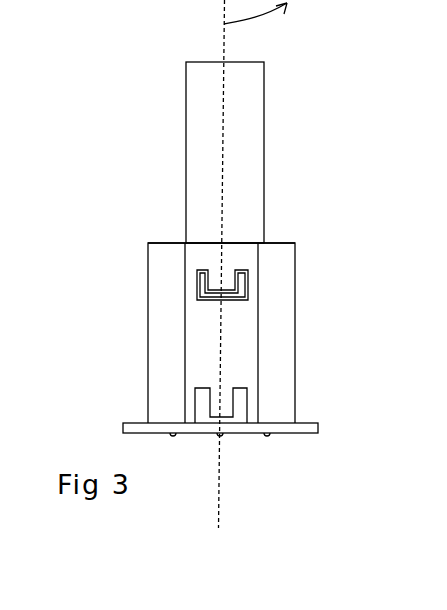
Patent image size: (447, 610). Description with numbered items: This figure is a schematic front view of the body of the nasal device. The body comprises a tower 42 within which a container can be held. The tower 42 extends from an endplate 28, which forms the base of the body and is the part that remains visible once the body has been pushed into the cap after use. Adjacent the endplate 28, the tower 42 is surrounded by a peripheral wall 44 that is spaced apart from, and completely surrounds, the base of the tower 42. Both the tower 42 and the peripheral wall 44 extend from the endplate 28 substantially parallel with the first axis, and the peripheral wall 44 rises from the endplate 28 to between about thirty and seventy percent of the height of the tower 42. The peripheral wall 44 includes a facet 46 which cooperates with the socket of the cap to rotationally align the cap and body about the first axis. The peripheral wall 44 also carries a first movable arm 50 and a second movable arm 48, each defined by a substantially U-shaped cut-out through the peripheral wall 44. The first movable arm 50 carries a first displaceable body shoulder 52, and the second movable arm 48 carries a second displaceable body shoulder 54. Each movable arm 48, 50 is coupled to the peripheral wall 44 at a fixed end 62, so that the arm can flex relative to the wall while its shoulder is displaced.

The endplate 28 is at (292, 435).
The tower 42 is at (252, 132).
The peripheral wall 44 is at (297, 306).
The facet 46 is at (243, 255).
The second movable arm 48 is at (197, 273).
The first movable arm 50 is at (220, 402).
The first displaceable body shoulder 52 is at (205, 435).
The second displaceable body shoulder 54 is at (197, 296).
The fixed end 62 is at (223, 266).